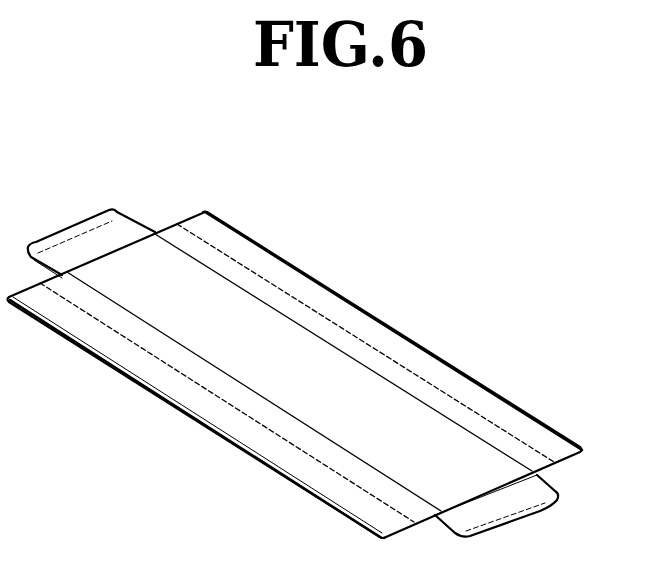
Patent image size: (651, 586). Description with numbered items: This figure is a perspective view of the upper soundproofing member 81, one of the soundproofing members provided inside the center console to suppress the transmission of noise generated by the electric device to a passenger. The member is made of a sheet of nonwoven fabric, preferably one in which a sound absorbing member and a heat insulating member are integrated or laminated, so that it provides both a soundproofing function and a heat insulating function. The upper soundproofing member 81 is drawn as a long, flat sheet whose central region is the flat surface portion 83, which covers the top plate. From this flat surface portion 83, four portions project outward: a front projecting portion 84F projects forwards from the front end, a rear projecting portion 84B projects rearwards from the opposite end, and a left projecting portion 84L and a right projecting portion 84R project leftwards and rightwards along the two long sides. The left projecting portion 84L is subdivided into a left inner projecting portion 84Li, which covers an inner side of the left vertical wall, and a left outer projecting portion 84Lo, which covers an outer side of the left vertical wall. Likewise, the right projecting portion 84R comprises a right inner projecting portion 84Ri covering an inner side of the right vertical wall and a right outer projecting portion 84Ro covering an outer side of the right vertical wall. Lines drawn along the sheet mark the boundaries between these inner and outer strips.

The upper soundproofing member 81 is at (357, 284).
The flat surface portion 83 is at (218, 320).
The front projecting portion 84F is at (88, 240).
The rear projecting portion 84B is at (497, 506).
The left projecting portion 84L is at (212, 410).
The left outer projecting portion 84Lo is at (205, 403).
The left inner projecting portion 84Li is at (297, 430).
The right projecting portion 84R is at (387, 337).
The right outer projecting portion 84Ro is at (437, 370).
The right inner projecting portion 84Ri is at (447, 405).